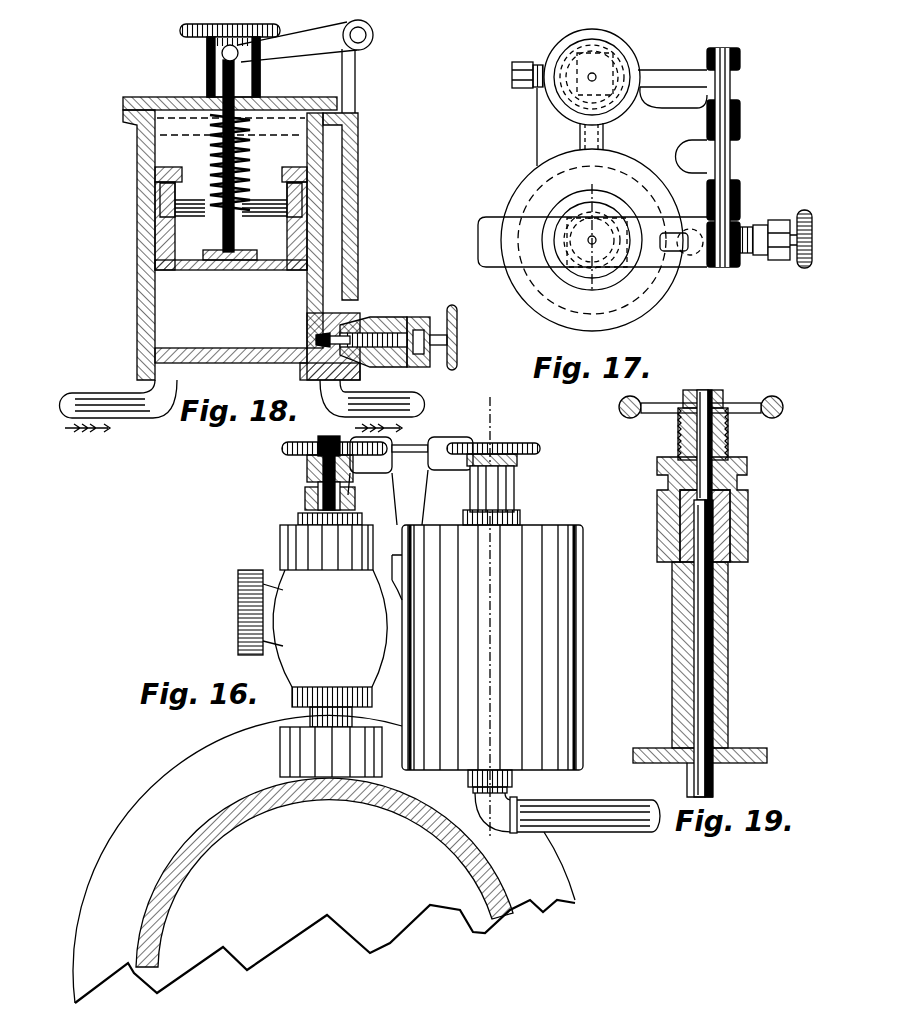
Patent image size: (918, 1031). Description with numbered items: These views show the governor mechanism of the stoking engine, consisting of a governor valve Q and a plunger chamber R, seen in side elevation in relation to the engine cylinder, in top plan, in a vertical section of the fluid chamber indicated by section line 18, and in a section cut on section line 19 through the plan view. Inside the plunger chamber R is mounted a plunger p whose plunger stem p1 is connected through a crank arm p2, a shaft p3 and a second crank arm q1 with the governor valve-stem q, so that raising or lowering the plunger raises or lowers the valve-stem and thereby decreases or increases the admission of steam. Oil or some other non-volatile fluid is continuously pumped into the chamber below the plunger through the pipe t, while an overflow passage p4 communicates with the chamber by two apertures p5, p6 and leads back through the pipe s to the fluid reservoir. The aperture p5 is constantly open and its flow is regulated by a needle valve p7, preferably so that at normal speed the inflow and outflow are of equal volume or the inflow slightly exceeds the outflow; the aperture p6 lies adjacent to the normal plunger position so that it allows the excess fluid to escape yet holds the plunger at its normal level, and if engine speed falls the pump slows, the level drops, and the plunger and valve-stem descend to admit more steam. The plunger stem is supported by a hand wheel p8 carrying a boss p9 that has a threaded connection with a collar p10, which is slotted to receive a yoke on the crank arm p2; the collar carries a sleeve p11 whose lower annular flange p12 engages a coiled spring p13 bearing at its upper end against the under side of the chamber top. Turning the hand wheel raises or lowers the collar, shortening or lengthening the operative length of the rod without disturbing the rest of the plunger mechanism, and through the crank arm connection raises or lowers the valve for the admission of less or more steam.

In FIG. 18, the plunger p is at (137, 256).
In FIG. 18, the plunger stem p1 is at (238, 241).
In FIG. 19, the plunger stem p1 is at (714, 781).
In FIG. 18, the crank arm p2 is at (273, 54).
In FIG. 17, the crank arm p2 is at (675, 267).
In FIG. 18, the shaft p3 is at (373, 35).
In FIG. 17, the shaft p3 is at (733, 160).
In FIG. 18, the overflow passage p4 is at (335, 287).
In FIG. 18, the aperture p5 is at (316, 340).
In FIG. 18, the aperture p6 is at (336, 238).
In FIG. 18, the needle valve p7 is at (316, 332).
In FIG. 16, the hand wheel p8 is at (532, 456).
In FIG. 19, the hand wheel p8 is at (626, 409).
In FIG. 19, the boss p9 is at (683, 425).
In FIG. 19, the collar p10 is at (662, 507).
In FIG. 19, the sleeve p11 is at (672, 612).
In FIG. 19, the annular flange p12 is at (650, 748).
In FIG. 18, the coiled spring p13 is at (205, 146).
In FIG. 16, the governor valve-stem q is at (307, 480).
In FIG. 17, the crank arm q1 is at (677, 72).
In FIG. 18, the plunger chamber R is at (137, 223).
In FIG. 17, the plunger chamber R is at (520, 183).
In FIG. 16, the plunger chamber R is at (586, 616).
In FIG. 16, the governor valve Q is at (283, 578).
In FIG. 18, the pipe t is at (87, 395).
In FIG. 16, the pipe t is at (620, 832).
In FIG. 18, the pipe s is at (422, 406).
In FIG. 16, the section line 18 is at (490, 617).
In FIG. 17, the section line 19— 19 is at (592, 240).